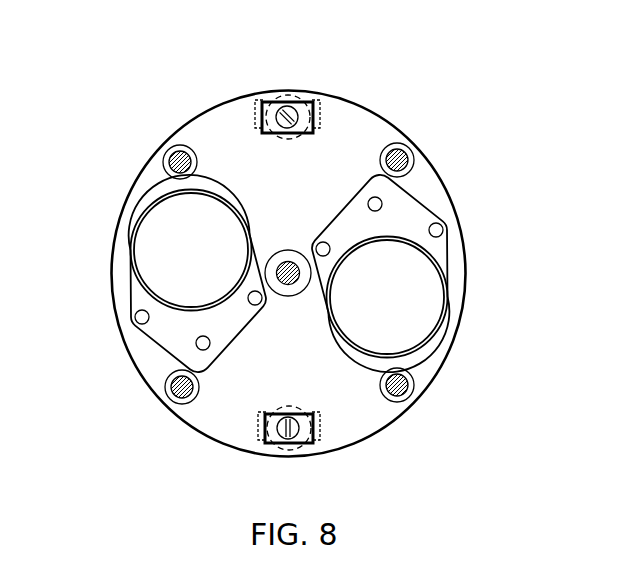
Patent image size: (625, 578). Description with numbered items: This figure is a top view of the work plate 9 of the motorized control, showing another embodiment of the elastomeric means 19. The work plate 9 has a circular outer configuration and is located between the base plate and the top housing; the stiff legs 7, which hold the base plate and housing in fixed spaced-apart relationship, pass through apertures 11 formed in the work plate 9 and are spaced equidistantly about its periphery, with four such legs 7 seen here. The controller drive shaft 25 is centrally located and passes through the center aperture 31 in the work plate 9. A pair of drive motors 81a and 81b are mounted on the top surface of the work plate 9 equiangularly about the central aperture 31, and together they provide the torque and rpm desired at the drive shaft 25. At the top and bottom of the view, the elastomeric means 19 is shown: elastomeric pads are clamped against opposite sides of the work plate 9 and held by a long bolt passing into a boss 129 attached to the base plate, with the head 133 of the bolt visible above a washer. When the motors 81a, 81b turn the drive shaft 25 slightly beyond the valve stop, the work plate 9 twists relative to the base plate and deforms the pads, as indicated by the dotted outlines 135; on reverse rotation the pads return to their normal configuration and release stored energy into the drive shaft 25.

The work plate 9 is at (143, 189).
The drive motor 81a is at (145, 257).
The drive motor 81b is at (423, 270).
The controller drive shaft 25 is at (293, 265).
The center aperture 31 is at (283, 300).
The aperture 11 is at (180, 146).
The stiff leg 7 is at (172, 160).
The boss 129 is at (293, 95).
The dotted outline 135 is at (323, 110).
The head of bolt 133 is at (282, 437).
The elastomeric means 19 is at (263, 96).